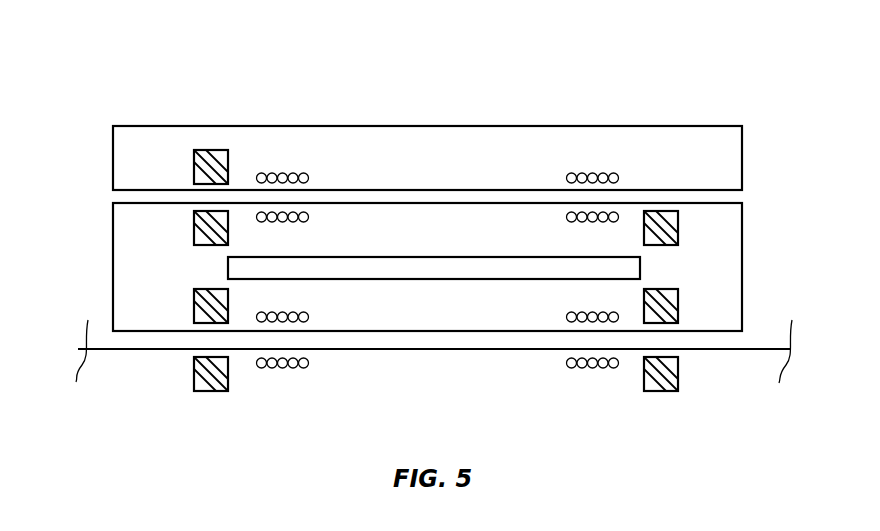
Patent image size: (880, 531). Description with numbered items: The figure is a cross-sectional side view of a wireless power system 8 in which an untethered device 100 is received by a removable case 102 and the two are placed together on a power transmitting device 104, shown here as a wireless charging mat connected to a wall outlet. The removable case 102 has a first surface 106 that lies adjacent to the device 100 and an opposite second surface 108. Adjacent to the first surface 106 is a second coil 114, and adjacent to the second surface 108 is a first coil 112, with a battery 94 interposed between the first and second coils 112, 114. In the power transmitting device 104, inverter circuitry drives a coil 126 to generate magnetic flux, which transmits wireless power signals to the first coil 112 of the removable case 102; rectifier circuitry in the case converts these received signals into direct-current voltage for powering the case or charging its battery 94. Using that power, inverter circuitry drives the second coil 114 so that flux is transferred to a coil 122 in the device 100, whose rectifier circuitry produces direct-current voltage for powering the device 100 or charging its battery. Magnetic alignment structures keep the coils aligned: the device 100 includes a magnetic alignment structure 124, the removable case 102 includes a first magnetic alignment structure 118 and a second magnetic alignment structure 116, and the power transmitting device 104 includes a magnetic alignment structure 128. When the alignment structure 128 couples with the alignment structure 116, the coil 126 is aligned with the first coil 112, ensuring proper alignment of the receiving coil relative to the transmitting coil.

The wireless power system 8 is at (136, 59).
The battery 94 is at (493, 268).
The device 100 is at (753, 127).
The removable case 102 is at (753, 203).
The power transmitting device 104 is at (792, 349).
The first surface 106 is at (116, 203).
The second surface 108 is at (100, 331).
The first coil 112 is at (321, 316).
The second coil 114 is at (318, 217).
The second magnetic alignment structure 116 is at (194, 302).
The first magnetic alignment structure 118 is at (194, 230).
The coil 122 is at (301, 160).
The magnetic alignment structure 124 is at (209, 150).
The coil 126 is at (325, 367).
The magnetic alignment structure 128 is at (211, 388).